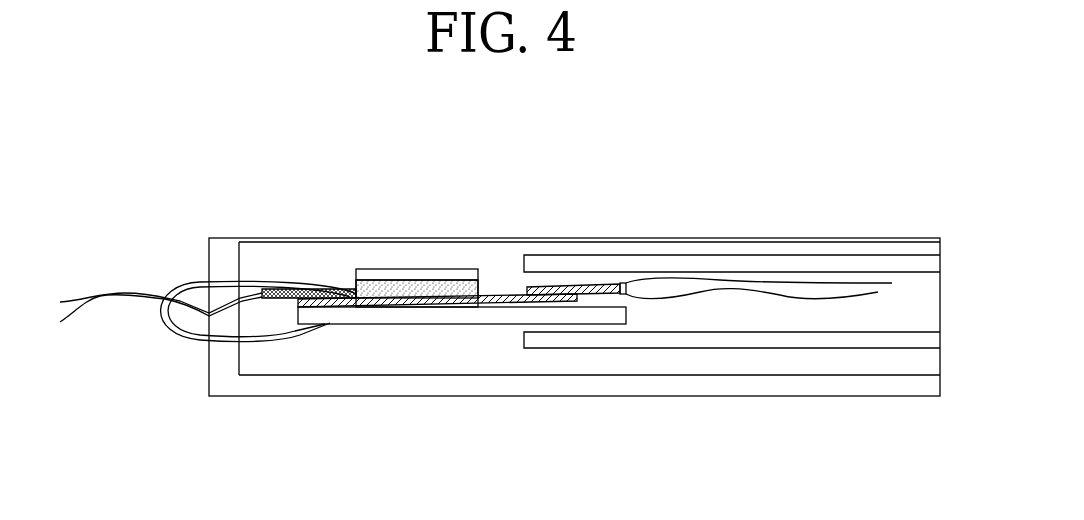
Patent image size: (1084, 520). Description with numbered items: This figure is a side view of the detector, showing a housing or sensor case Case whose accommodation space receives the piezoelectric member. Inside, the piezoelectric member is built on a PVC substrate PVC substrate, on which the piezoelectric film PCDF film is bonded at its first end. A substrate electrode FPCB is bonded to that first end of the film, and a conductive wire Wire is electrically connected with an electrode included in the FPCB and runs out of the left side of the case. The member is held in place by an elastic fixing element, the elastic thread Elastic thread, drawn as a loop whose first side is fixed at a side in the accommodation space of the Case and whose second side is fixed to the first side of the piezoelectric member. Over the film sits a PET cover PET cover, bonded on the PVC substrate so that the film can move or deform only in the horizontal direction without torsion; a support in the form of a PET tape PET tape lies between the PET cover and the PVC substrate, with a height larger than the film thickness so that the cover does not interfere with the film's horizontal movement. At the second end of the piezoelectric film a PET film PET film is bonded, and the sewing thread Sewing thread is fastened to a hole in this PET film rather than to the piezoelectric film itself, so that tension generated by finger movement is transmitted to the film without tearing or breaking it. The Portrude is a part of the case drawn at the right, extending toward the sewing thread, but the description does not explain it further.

The wire Wire is at (145, 297).
The elastic thread Elastic thread is at (203, 334).
The substrate electrode FPCB is at (293, 294).
The element PET cover is at (391, 275).
The element PET tape is at (465, 288).
The element PET film is at (577, 289).
The sewing thread Sewing thread is at (662, 277).
The piezoelectric film PCDF film is at (344, 302).
The sensor case Case is at (437, 386).
The element PVC substrate is at (590, 315).
The protrusion Portrude is at (777, 340).